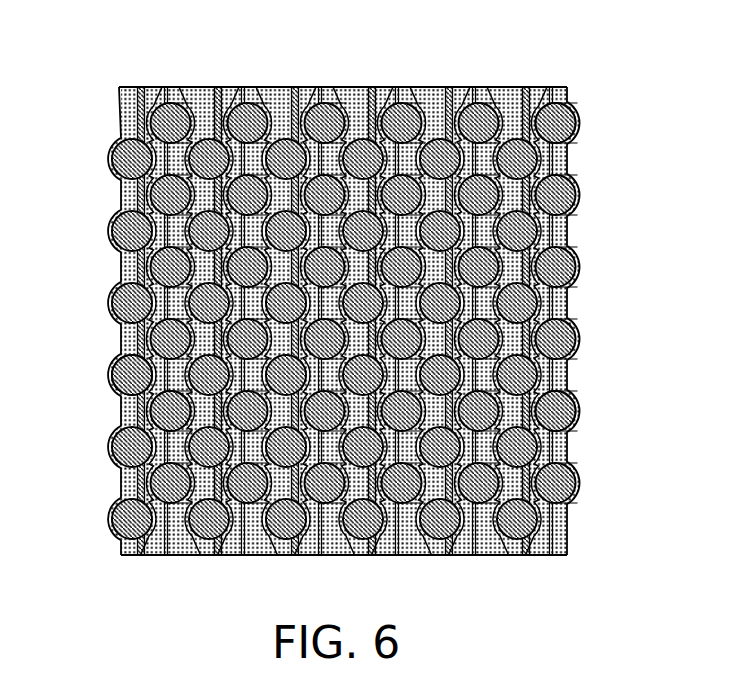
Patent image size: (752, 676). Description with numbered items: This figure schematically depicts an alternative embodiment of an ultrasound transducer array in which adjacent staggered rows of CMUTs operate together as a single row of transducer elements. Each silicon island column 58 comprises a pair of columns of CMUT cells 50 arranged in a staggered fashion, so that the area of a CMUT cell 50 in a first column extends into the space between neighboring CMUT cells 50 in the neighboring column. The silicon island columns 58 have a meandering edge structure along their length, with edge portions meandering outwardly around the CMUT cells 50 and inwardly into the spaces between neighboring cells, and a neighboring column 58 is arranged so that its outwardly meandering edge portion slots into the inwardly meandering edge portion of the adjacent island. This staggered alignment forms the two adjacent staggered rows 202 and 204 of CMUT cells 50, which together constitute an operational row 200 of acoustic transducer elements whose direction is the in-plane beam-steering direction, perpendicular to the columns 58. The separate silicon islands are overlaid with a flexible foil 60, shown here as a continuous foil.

The CMUT cell 50 is at (573, 114).
The silicon island column 58 is at (527, 87).
The flexible foil 60 is at (119, 104).
The operational row 200 is at (96, 350).
The staggered row 202 is at (581, 374).
The staggered row 204 is at (595, 410).